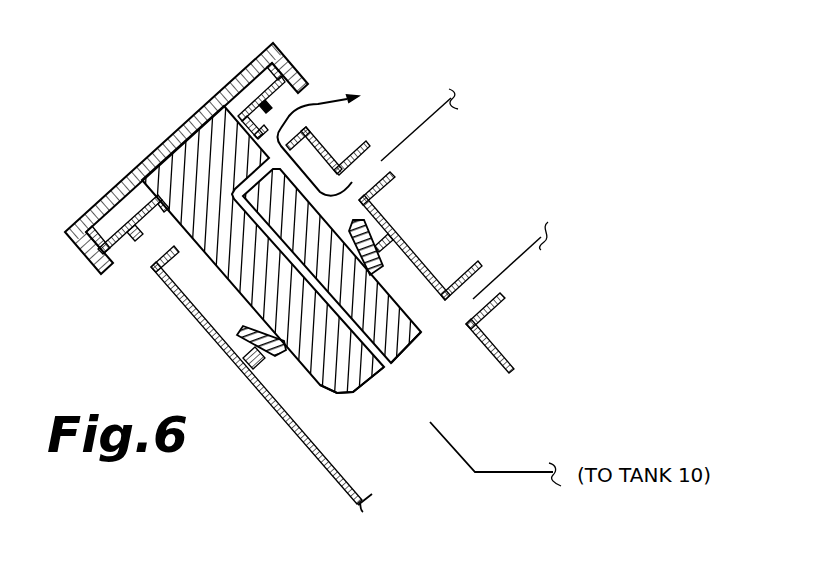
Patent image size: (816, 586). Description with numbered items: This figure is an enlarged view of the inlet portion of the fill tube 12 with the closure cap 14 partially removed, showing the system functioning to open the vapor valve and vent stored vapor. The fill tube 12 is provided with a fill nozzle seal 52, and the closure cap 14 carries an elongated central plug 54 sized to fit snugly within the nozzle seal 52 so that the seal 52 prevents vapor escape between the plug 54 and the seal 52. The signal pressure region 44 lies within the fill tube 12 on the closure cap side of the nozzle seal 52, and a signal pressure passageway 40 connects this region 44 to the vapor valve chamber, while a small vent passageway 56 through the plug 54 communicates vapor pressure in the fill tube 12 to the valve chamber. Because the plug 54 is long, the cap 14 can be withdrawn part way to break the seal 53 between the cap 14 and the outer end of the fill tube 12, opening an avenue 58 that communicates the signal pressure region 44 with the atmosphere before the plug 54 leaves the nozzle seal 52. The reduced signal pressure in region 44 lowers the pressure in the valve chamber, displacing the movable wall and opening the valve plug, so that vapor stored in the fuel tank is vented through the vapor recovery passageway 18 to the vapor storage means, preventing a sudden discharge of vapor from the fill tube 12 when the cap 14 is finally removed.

The closure cap 14 is at (121, 182).
The fill tube 12 is at (337, 477).
The vapor recovery passageway 18 is at (517, 260).
The signal pressure passageway 40 is at (437, 103).
The signal pressure region 44 is at (358, 184).
The fill nozzle seal 52 is at (237, 350).
The seal 53 is at (130, 245).
The elongated central plug 54 is at (322, 388).
The vent passageway 56 is at (360, 347).
The avenue 58 is at (288, 128).